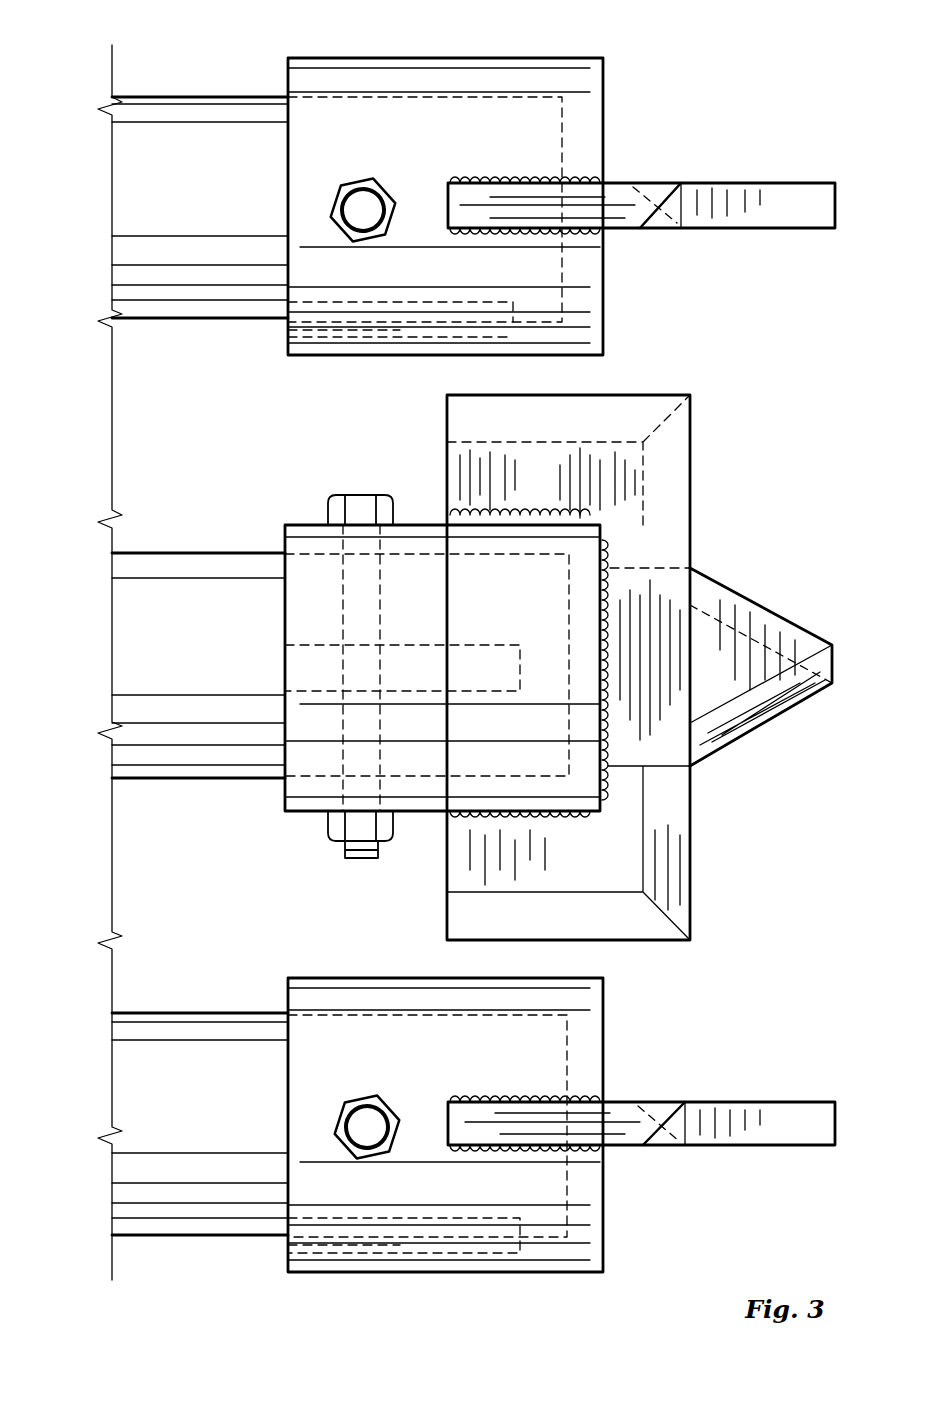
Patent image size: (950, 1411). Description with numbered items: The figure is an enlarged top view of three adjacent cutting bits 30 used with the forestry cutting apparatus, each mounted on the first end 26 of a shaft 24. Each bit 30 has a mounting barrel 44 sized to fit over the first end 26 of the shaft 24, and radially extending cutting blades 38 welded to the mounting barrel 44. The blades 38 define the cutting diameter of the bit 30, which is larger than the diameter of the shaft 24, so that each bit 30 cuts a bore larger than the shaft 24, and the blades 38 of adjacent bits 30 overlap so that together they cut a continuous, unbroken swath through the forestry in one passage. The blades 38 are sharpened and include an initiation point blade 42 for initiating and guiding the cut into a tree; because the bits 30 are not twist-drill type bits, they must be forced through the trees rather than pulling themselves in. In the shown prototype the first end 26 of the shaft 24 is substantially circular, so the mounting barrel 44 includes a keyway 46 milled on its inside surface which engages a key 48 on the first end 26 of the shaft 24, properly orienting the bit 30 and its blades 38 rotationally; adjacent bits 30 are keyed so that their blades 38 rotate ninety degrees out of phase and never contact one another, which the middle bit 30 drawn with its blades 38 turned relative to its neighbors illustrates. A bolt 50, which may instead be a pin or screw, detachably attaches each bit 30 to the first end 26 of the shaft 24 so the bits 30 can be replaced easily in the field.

The shaft 24 is at (188, 113).
The first end of the shaft 26 is at (525, 117).
The cutting bit 30 is at (652, 135).
The cutting blade 38 is at (627, 215).
The initiation point blade 42 is at (790, 636).
The mounting barrel 44 is at (432, 78).
The keyway 46 is at (495, 328).
The key 48 is at (300, 333).
The bolt 50 is at (365, 200).